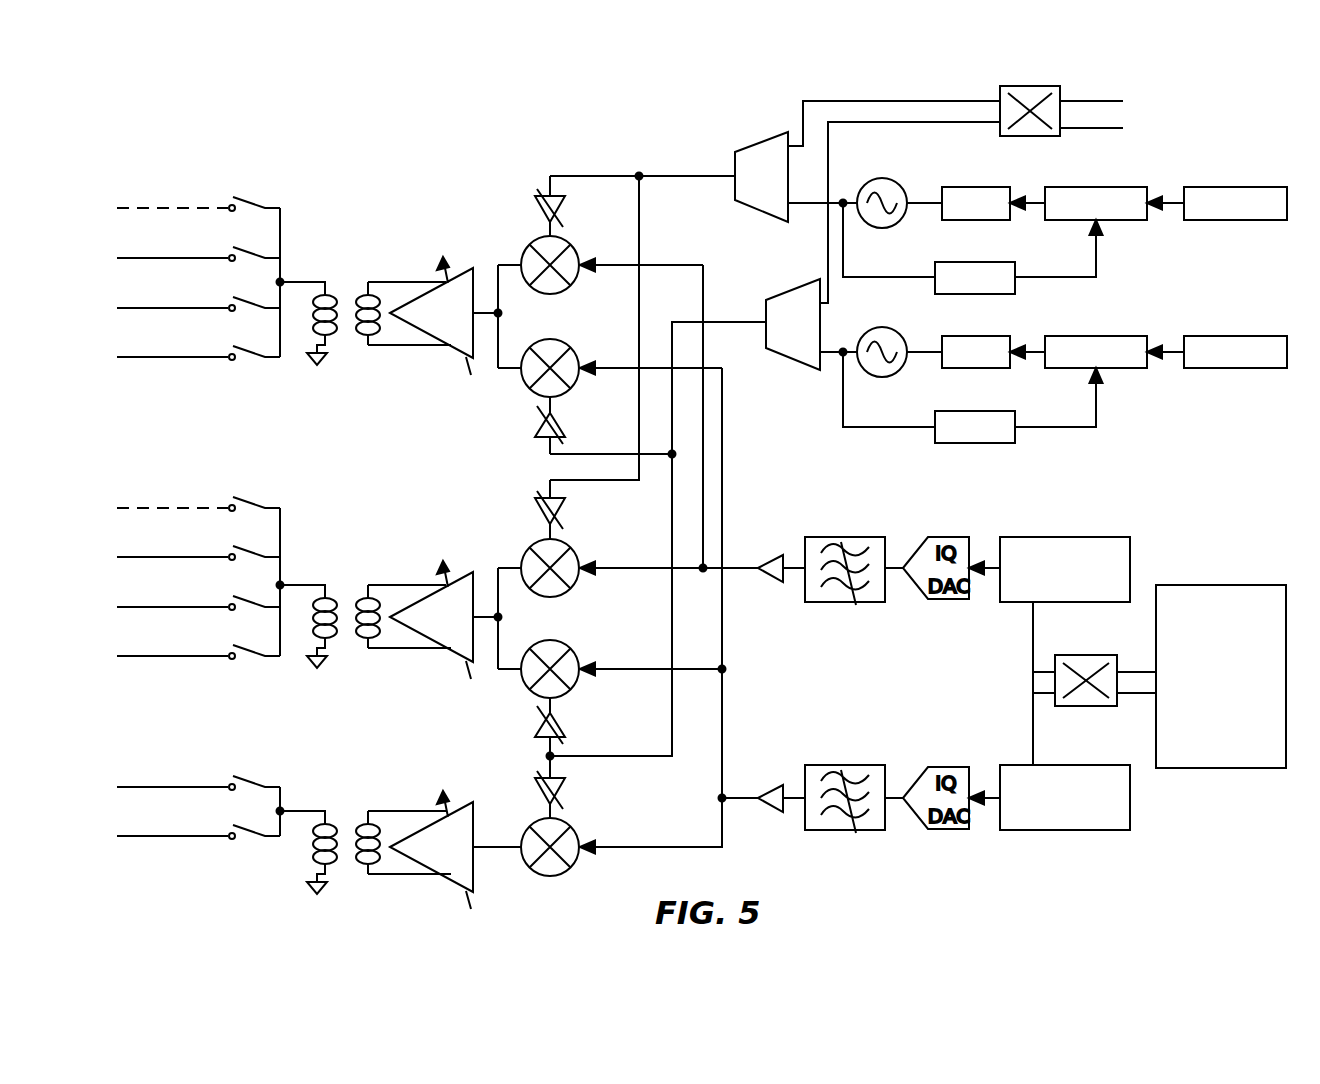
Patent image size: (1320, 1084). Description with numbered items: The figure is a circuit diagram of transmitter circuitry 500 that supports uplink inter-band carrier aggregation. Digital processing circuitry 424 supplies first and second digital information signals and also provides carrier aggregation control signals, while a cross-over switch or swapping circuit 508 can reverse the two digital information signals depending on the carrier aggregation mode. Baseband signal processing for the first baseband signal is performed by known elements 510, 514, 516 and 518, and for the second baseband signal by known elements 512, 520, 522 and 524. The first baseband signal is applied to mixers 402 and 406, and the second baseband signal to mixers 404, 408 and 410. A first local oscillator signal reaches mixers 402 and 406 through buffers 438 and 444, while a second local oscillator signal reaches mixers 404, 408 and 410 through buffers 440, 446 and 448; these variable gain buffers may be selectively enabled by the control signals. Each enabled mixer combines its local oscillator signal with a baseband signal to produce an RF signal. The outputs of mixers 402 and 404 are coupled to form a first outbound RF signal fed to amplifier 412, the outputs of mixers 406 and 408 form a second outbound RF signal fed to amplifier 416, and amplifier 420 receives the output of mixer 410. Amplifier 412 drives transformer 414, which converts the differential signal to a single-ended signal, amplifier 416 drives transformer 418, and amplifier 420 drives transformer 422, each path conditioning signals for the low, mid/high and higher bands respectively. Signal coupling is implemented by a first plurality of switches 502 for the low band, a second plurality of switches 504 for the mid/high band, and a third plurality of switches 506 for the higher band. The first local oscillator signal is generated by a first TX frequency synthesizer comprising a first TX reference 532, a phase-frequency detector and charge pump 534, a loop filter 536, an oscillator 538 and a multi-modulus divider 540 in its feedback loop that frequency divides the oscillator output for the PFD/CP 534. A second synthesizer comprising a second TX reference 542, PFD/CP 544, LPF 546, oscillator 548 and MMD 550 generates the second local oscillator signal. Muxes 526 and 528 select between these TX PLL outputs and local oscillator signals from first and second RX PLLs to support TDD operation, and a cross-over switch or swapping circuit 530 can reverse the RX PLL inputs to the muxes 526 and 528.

The transmitter circuitry 500 is at (231, 144).
The first plurality of switches 502 is at (257, 200).
The second plurality of switches 504 is at (257, 501).
The third plurality of switches 506 is at (257, 779).
The transformer 414 is at (327, 282).
The transformer 418 is at (327, 585).
The transformer 422 is at (327, 811).
The amplifier 412 is at (453, 355).
The amplifier 416 is at (453, 657).
The amplifier 420 is at (455, 884).
The mixer 402 is at (536, 238).
The mixer 404 is at (568, 392).
The mixer 406 is at (536, 541).
The mixer 408 is at (570, 692).
The mixer 410 is at (575, 865).
The buffer 438 is at (565, 208).
The buffer 440 is at (537, 425).
The buffer 444 is at (565, 510).
The buffer 446 is at (537, 727).
The buffer 448 is at (565, 790).
The mux 526 is at (742, 150).
The mux 528 is at (770, 298).
The cross-over switch or swapping circuit 530 is at (1040, 137).
The first TX reference 532 is at (1225, 221).
The phase-frequency detector and charge pump 534 is at (1125, 221).
The loop filter 536 is at (985, 187).
The oscillator 538 is at (895, 222).
The multi-modulus divider 540 is at (1018, 265).
The second TX reference 542 is at (1225, 369).
The phase-frequency detector and charge pump 544 is at (1125, 369).
The loop filter 546 is at (985, 336).
The oscillator 548 is at (895, 372).
The multi-modulus divider 550 is at (990, 444).
The cross-over switch or swapping circuit 508 is at (1072, 707).
The baseband signal processing element 510 is at (1072, 603).
The baseband signal processing element 512 is at (1072, 831).
The baseband signal processing element 514 is at (948, 603).
The baseband signal processing element 516 is at (853, 603).
The baseband signal processing element 518 is at (770, 582).
The baseband signal processing element 520 is at (948, 831).
The baseband signal processing element 522 is at (853, 831).
The baseband signal processing element 524 is at (770, 812).
The digital processing circuitry 424 is at (1203, 727).